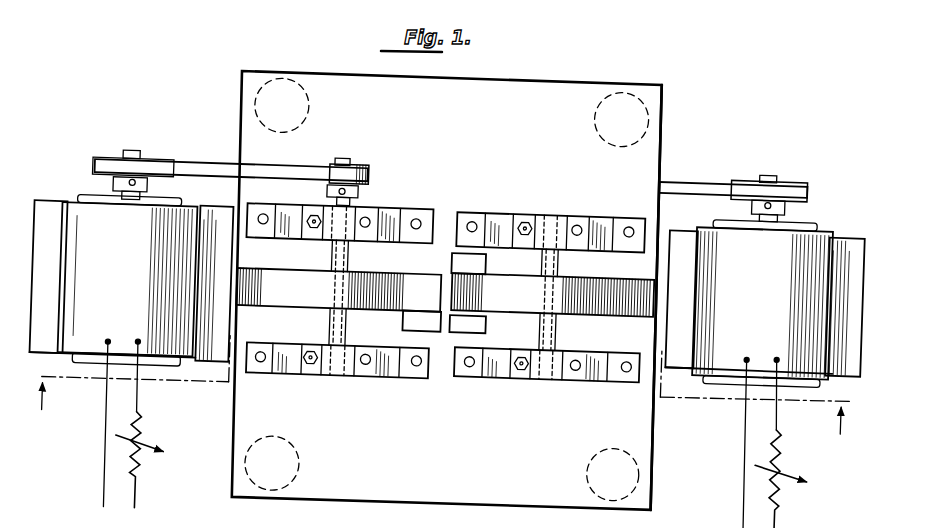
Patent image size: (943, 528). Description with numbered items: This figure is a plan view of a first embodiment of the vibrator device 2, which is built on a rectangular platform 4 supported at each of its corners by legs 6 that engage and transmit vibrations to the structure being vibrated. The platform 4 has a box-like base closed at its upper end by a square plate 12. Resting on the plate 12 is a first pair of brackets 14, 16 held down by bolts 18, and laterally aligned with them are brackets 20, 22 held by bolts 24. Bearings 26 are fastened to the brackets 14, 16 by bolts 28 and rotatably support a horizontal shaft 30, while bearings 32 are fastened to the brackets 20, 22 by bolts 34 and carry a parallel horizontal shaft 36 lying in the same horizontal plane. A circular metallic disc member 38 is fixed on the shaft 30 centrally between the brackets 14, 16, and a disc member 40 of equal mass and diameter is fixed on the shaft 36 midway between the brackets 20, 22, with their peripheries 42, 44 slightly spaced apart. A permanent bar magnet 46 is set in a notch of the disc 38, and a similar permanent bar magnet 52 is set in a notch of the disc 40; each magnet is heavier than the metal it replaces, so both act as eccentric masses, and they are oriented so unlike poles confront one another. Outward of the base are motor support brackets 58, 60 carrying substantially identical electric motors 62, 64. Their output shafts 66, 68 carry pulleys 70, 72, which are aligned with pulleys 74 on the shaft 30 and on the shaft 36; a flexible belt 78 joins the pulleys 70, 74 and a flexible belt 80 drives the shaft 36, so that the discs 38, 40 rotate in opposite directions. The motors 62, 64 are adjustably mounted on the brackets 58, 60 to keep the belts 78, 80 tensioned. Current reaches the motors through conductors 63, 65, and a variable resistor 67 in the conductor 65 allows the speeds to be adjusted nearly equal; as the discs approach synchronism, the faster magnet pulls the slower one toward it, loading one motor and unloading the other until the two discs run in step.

The vibrator device 2 is at (448, 254).
The rectangular platform 4 is at (673, 298).
The legs 6 is at (447, 289).
The square plate 12 is at (446, 291).
The bracket 14 is at (340, 203).
The bracket 16 is at (337, 372).
The bolts 18 is at (345, 291).
The bracket 20 is at (551, 207).
The bracket 22 is at (546, 383).
The bolts 24 is at (551, 300).
The bearings 26 is at (306, 292).
The bolts 28 is at (371, 315).
The shaft 30 is at (319, 292).
The bearings 32 is at (582, 320).
The bolts 34 is at (558, 304).
The shaft 36 is at (570, 300).
The circular disc member 38 is at (256, 273).
The circular disc member 40 is at (606, 283).
The periphery 42 is at (339, 275).
The periphery 44 is at (552, 281).
The permanent bar magnet 46 is at (397, 323).
The permanent bar magnet 52 is at (486, 328).
The motor support bracket 58 is at (132, 259).
The motor support bracket 60 is at (765, 286).
The electric motor 62 is at (127, 280).
The electric motor 64 is at (762, 303).
The conductor 63 is at (405, 431).
The conductor 65 is at (476, 432).
The variable resistor 67 is at (470, 459).
The output shaft 66 is at (151, 141).
The output shaft 68 is at (766, 157).
The pulley 70 is at (132, 160).
The pulley 72 is at (770, 182).
The pulley 74 is at (356, 169).
The flexible belt 78 is at (232, 155).
The flexible belt 80 is at (734, 170).